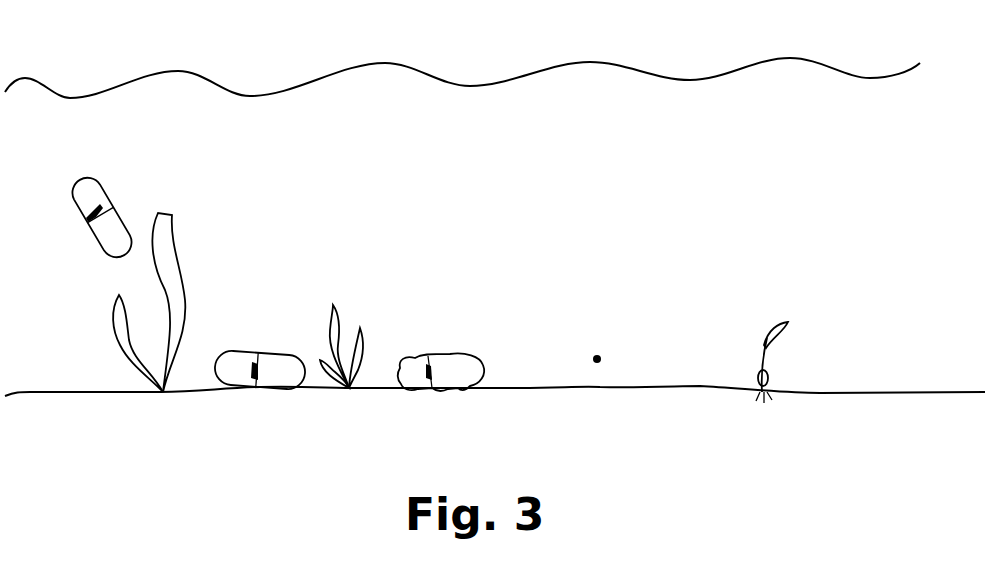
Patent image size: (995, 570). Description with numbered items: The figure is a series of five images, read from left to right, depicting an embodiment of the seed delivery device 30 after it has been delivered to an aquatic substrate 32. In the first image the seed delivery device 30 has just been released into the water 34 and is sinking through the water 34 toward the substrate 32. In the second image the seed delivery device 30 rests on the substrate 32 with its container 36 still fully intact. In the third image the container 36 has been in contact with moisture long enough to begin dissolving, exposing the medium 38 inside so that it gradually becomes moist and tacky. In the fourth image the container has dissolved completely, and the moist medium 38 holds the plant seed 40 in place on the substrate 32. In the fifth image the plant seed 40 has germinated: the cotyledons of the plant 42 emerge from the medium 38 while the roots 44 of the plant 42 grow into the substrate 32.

The seed delivery device 30 is at (74, 219).
The aquatic substrate 32 is at (80, 392).
The water 34 is at (327, 77).
The container 36 is at (446, 357).
The medium 38 is at (414, 358).
The plant seed 40 is at (596, 356).
The plant 42 is at (770, 325).
The roots 44 is at (762, 398).